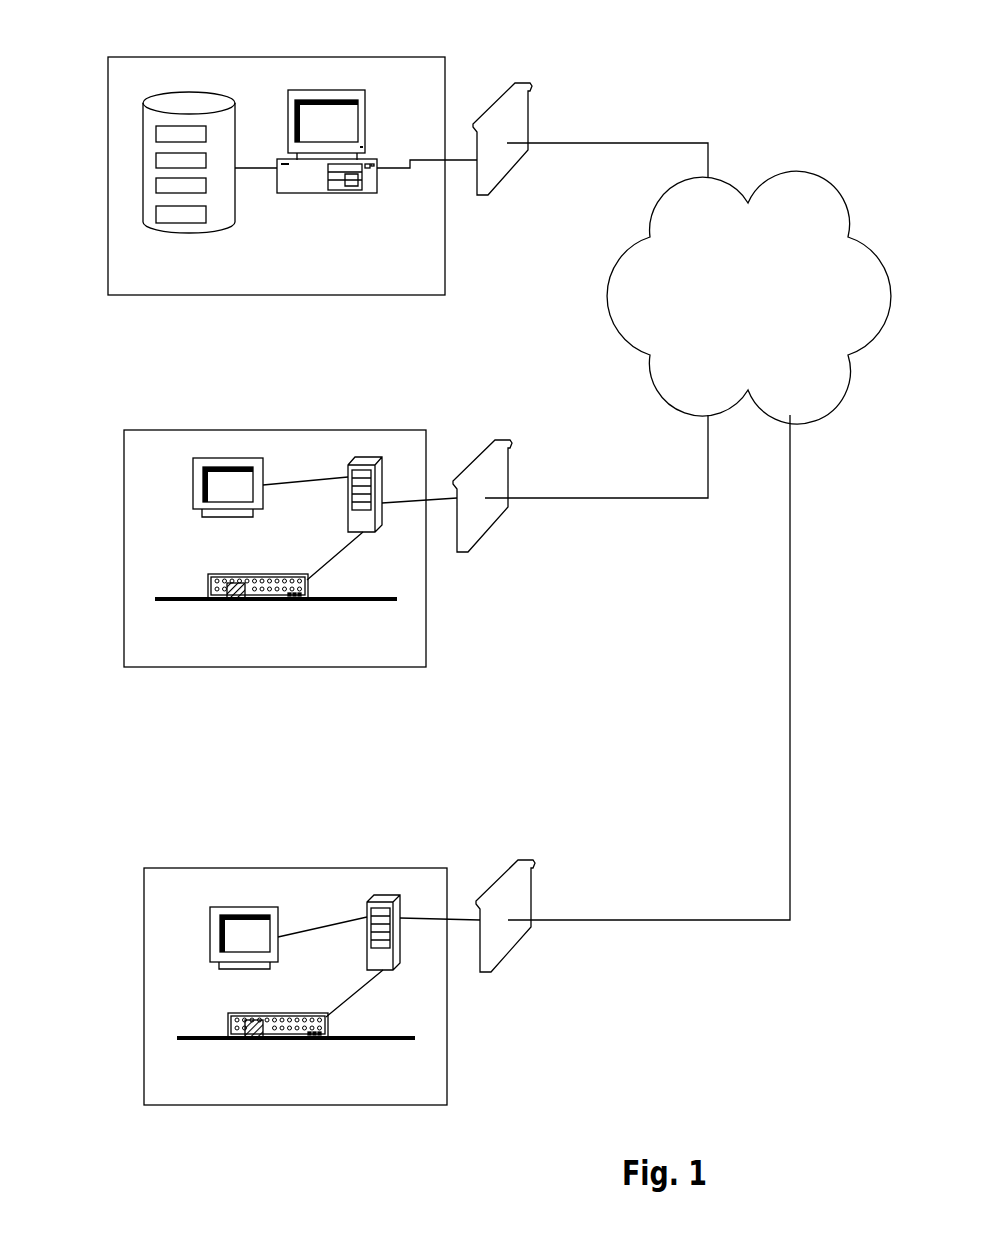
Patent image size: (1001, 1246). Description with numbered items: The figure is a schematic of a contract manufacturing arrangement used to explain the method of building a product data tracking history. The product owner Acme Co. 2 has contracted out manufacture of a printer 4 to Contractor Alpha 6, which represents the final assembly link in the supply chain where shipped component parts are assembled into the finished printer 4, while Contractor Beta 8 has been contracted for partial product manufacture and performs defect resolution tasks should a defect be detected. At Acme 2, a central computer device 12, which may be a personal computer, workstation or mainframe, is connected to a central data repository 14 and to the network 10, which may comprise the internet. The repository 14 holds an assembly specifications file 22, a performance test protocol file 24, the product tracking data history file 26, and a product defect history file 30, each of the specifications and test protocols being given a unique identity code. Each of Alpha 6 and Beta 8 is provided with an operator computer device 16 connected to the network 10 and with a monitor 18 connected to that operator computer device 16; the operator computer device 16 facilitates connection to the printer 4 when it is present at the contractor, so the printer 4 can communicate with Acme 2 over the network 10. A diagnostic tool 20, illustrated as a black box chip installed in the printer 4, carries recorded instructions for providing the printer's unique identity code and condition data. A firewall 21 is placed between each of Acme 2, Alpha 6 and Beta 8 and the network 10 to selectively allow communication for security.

The Acme Co. 2 is at (302, 57).
The printer 4 is at (253, 574).
The Contractor Alpha 6 is at (290, 430).
The Contractor Beta 8 is at (427, 868).
The network 10 is at (788, 178).
The central computer device 12 is at (328, 193).
The central data repository 14 is at (215, 91).
The operator computer device 16 is at (372, 458).
The monitor 18 is at (196, 458).
The diagnostic tool 20 is at (238, 598).
The firewall 21 is at (507, 173).
The assembly specifications file 22 is at (156, 132).
The performance test protocol file 24 is at (156, 159).
The product tracking data history file 26 is at (156, 186).
The product defect history file 30 is at (156, 214).